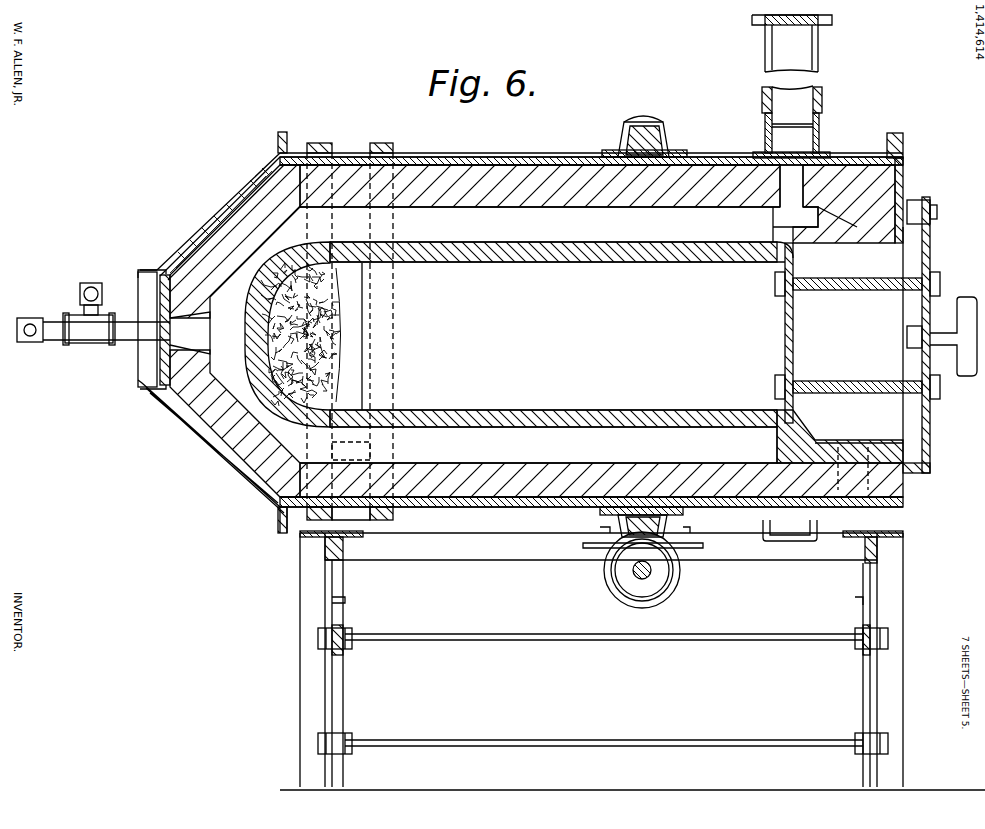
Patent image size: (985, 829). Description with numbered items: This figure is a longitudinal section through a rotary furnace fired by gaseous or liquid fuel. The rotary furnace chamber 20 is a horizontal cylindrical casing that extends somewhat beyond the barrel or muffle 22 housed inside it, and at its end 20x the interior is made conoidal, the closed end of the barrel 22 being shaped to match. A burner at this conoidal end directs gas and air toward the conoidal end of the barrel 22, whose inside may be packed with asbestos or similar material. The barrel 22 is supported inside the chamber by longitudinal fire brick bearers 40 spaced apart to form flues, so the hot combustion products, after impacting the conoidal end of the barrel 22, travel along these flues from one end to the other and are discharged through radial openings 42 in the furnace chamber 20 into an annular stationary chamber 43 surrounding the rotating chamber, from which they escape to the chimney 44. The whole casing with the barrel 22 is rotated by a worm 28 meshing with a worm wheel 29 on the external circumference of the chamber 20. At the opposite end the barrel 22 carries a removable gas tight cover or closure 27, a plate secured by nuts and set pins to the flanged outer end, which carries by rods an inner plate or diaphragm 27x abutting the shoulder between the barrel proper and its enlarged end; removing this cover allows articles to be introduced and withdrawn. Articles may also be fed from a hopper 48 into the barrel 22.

The rotary furnace chamber 20 is at (470, 505).
The conoidal end of furnace chamber 20x is at (218, 393).
The barrel or muffle 22 is at (521, 409).
The removable gas tight cover or closure 27 is at (921, 403).
The inner plate or diaphragm 27x is at (786, 330).
The worm 28 is at (630, 597).
The worm wheel 29 is at (641, 121).
The longitudinal fire brick bearers 40 is at (258, 300).
The radial openings 42 is at (762, 513).
The annular stationary chamber 43 is at (773, 140).
The chimney 44 is at (804, 53).
The hopper 48 is at (798, 175).